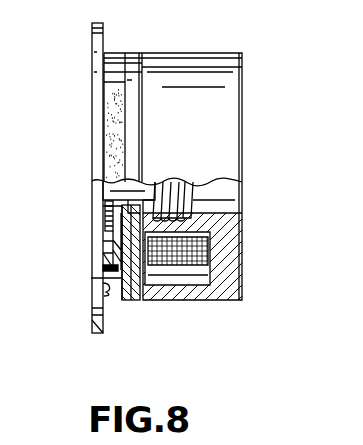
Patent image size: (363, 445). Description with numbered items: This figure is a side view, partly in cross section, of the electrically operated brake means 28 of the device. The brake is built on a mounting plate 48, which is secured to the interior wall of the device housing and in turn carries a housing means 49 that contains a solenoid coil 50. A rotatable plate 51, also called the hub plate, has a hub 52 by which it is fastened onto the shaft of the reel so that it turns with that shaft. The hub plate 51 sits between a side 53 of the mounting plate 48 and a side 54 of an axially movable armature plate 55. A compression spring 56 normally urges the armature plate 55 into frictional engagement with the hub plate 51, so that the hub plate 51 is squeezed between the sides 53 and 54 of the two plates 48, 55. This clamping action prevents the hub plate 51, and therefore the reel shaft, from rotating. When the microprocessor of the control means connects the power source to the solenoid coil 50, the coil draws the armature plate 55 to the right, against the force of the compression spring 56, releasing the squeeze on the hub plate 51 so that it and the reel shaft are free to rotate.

The brake means 28 is at (256, 130).
The mounting plate 48 is at (92, 302).
The housing means 49 is at (205, 67).
The solenoid coil 50 is at (190, 265).
The rotatable plate 51 is at (100, 268).
The hub 52 is at (103, 213).
The side of the mounting plate 53 is at (103, 287).
The side of the armature plate 54 is at (124, 290).
The armature plate 55 is at (136, 300).
The compression spring 56 is at (183, 183).